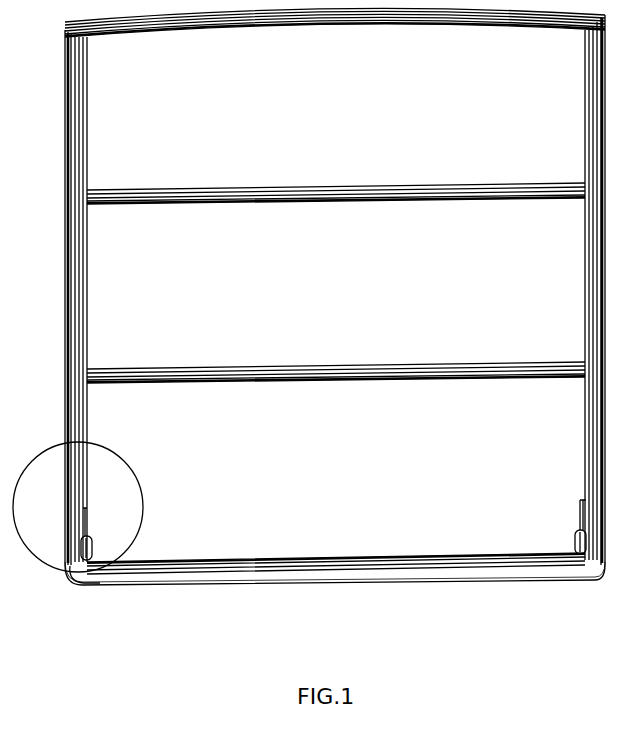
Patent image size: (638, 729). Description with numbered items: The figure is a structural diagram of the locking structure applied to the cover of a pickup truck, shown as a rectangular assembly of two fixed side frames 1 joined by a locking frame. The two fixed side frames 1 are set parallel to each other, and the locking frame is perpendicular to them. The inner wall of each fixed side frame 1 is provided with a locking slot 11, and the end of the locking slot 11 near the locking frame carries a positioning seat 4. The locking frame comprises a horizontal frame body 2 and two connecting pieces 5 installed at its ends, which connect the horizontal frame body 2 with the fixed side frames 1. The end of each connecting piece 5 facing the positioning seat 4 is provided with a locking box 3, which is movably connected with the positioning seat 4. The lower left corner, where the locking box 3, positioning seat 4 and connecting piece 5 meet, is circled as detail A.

The fixed side frame 1 is at (85, 452).
The locking slot 11 is at (88, 478).
The positioning seat 4 is at (85, 512).
The locking box 3 is at (93, 548).
The horizontal frame body 2 is at (313, 572).
The connecting piece 5 is at (82, 588).
The detail region A is at (40, 562).